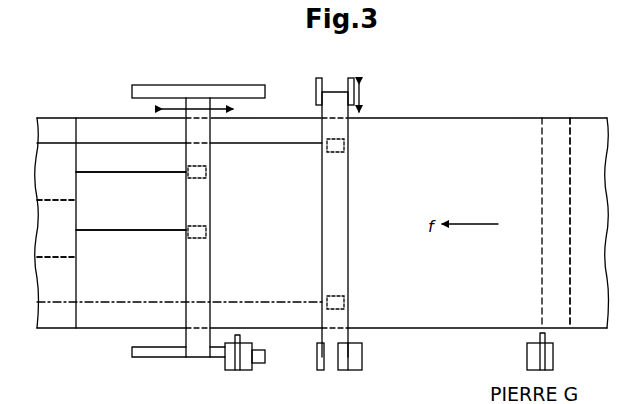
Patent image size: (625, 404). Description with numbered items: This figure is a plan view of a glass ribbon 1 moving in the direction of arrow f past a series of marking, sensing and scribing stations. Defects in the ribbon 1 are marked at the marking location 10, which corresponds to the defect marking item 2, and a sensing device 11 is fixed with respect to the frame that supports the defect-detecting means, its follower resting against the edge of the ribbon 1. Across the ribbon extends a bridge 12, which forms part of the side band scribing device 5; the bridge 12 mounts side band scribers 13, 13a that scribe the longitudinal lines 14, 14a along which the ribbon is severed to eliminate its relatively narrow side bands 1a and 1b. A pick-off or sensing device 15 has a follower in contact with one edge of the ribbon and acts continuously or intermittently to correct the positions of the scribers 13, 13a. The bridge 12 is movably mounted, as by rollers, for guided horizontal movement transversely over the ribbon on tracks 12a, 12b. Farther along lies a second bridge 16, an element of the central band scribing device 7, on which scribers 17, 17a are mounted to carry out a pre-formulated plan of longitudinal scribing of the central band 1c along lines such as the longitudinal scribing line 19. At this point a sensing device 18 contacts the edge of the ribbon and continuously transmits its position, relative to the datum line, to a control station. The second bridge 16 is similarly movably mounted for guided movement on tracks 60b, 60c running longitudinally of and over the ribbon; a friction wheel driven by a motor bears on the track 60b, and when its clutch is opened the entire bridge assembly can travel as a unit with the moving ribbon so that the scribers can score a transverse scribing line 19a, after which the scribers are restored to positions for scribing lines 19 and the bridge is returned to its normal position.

The ribbon 1 is at (432, 128).
The side band 1a is at (270, 129).
The side band 1b is at (262, 330).
The central band 1c is at (292, 213).
The defect marking item 2 is at (553, 112).
The side band scribing device 5 is at (355, 224).
The central band scribing device 7 is at (201, 229).
The marking location 10 is at (560, 213).
The sensing device 11 is at (554, 357).
The bridge 12 is at (340, 239).
The track 12a is at (347, 80).
The track 12b is at (319, 372).
The side band scriber 13 is at (346, 152).
The side band scriber 13a is at (350, 300).
The longitudinal line 14 is at (272, 146).
The longitudinal line 14a is at (277, 303).
The pick-off or sensing device 15 is at (363, 366).
The second bridge 16 is at (205, 280).
The scriber 17 is at (208, 172).
The scriber 17a is at (208, 232).
The sensing device 18 is at (248, 371).
The longitudinal scribing line 19 is at (115, 229).
The transverse scribing line 19a is at (76, 284).
The track 60b is at (152, 88).
The track 60c is at (135, 360).